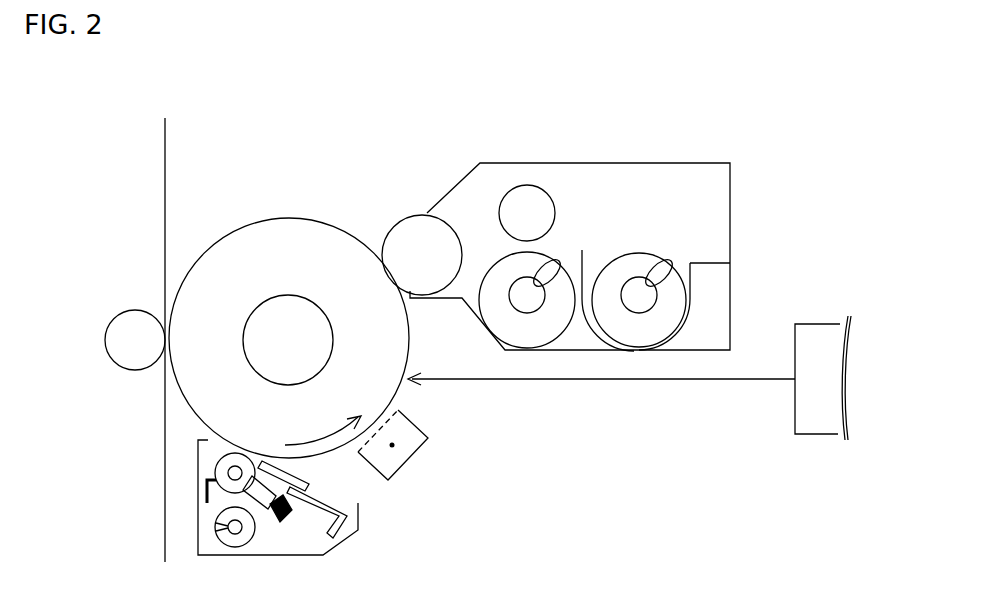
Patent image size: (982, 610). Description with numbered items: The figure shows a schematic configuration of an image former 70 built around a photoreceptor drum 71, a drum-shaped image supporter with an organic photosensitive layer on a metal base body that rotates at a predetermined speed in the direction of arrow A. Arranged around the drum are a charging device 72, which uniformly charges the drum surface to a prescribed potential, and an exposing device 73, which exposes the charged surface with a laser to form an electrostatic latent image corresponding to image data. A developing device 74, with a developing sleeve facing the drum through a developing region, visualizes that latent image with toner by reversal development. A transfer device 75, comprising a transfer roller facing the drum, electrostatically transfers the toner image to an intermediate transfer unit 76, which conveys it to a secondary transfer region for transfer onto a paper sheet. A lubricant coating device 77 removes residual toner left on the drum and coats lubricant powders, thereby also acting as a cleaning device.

The image former 70 is at (182, 93).
The photoreceptor drum 71 is at (289, 218).
The charging device 72 is at (426, 419).
The exposing device 73 is at (818, 436).
The developing device 74 is at (730, 258).
The transfer device 75 is at (135, 310).
The intermediate transfer unit 76 is at (165, 468).
The lubricant coating device 77 is at (361, 517).